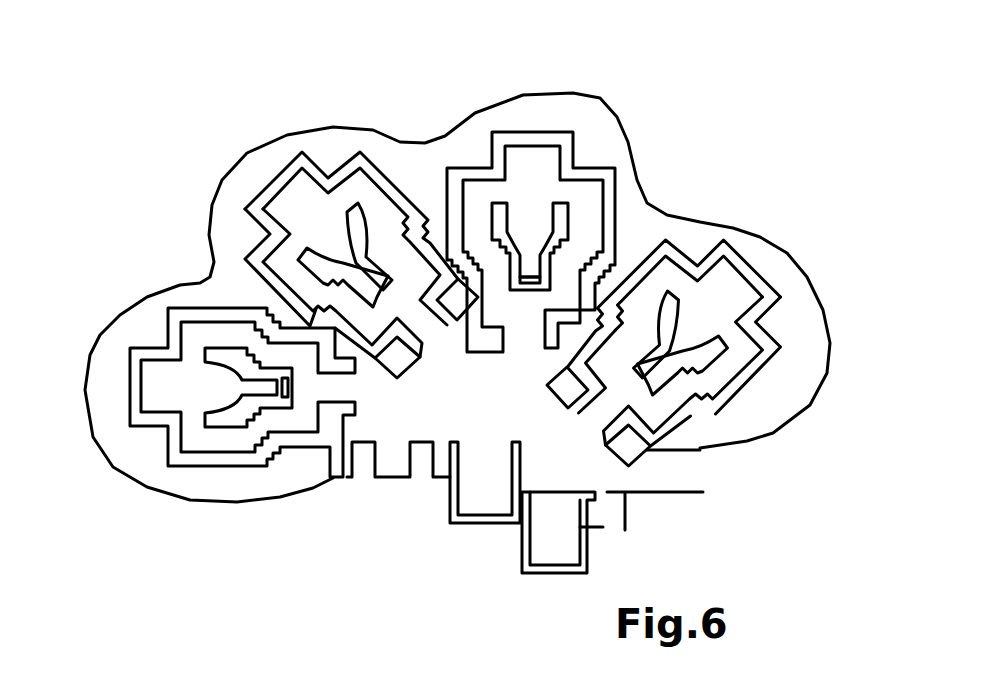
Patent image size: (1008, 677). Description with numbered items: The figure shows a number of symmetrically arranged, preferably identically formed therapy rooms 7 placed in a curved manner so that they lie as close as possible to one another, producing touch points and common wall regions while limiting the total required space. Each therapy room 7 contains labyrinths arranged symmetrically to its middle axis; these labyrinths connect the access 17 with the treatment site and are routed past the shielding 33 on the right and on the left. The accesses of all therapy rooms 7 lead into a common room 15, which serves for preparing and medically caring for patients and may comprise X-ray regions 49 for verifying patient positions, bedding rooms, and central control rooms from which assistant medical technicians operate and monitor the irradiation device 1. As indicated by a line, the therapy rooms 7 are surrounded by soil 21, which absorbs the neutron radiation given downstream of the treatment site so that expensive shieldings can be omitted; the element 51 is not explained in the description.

The irradiation device 1 is at (698, 205).
The therapy room 7 is at (738, 256).
The room 15 is at (478, 426).
The access 17 is at (595, 449).
The soil 21 is at (450, 167).
The shielding 33 is at (702, 360).
The X-ray region 49 is at (547, 548).
The flange 51 is at (567, 392).